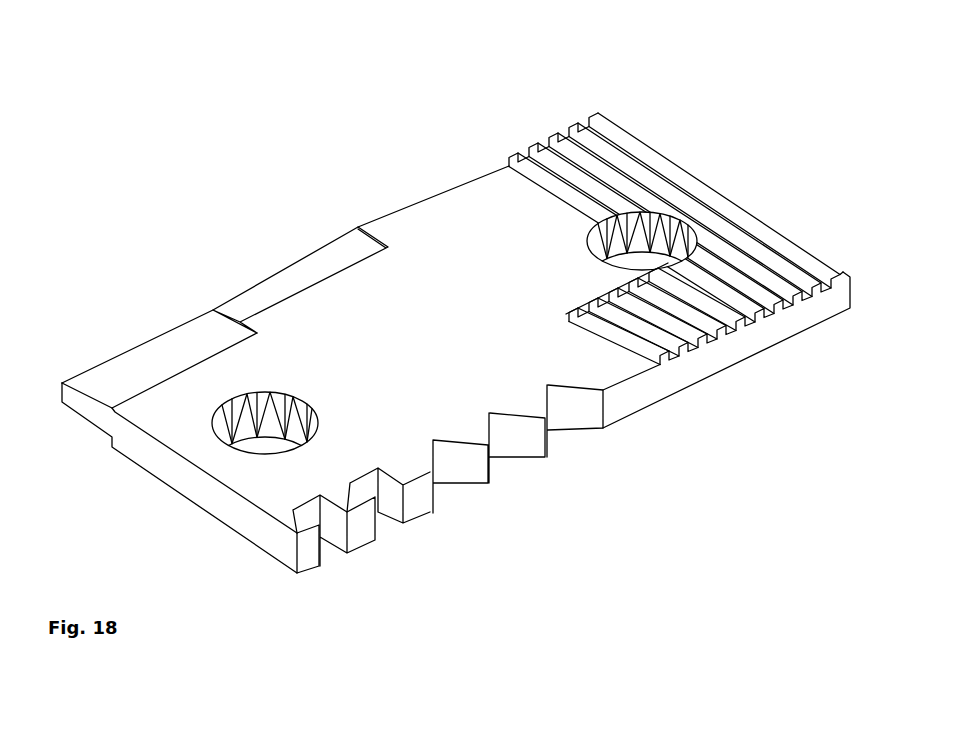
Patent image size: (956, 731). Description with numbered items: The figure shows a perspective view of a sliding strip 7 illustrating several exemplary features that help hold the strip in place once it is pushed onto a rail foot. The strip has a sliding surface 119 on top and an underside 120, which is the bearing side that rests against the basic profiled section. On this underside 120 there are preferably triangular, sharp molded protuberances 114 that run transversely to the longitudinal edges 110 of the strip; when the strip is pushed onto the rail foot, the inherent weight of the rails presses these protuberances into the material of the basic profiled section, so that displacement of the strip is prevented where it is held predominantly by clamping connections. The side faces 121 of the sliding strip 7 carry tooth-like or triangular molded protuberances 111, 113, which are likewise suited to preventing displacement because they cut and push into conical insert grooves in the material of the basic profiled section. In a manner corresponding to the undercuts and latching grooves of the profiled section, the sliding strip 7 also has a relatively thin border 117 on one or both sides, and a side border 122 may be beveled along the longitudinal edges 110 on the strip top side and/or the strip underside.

The sliding strip 7 is at (382, 350).
The longitudinal edges 110 is at (413, 196).
The molded protuberance 111 is at (362, 530).
The molded protuberance 113 is at (473, 467).
The molded protuberances 114 is at (658, 163).
The border 117 is at (125, 373).
The sliding surface 119 is at (195, 503).
The underside 120 is at (478, 293).
The side faces 121 is at (740, 352).
The side border 122 is at (248, 302).